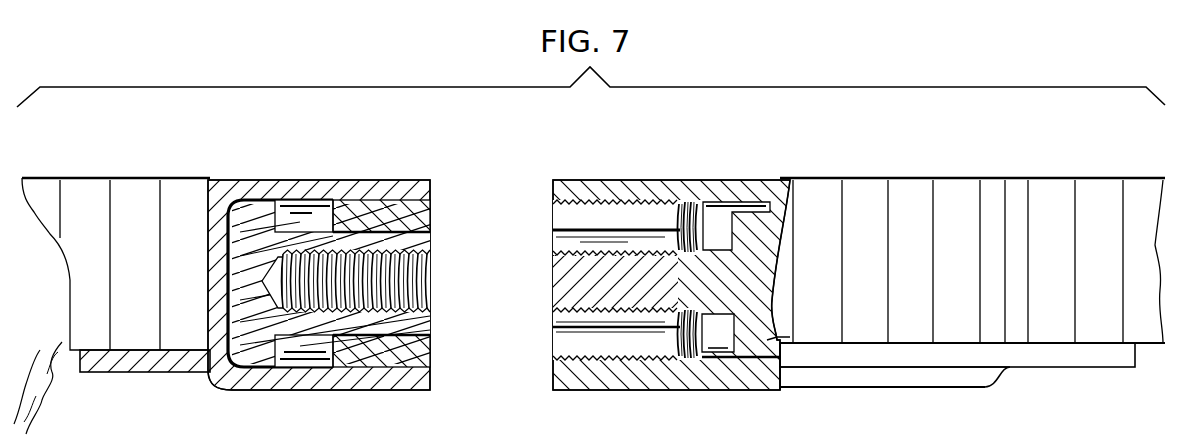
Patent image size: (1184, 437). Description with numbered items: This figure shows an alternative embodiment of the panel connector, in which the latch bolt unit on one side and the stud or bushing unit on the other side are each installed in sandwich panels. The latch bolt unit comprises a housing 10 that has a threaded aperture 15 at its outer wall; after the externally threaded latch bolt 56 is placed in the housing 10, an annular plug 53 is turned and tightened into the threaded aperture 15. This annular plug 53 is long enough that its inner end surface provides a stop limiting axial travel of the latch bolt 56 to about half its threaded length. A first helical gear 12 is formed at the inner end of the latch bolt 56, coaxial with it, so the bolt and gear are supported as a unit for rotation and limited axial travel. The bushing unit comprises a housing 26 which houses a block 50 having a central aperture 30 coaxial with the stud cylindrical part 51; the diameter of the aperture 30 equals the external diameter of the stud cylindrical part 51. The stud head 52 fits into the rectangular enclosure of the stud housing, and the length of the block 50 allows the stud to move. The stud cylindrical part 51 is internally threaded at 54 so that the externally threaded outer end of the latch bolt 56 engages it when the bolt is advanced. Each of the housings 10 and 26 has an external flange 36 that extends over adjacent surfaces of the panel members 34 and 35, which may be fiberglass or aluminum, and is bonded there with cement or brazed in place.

The panel member 34 is at (100, 178).
The stud head 52 is at (250, 204).
The block 50 is at (405, 213).
The central aperture 30 is at (424, 232).
The stud cylindrical part 51 is at (414, 249).
The internal thread 54 is at (400, 292).
The external flange 36 is at (157, 362).
The housing 26 is at (390, 380).
The annular plug 53 is at (560, 220).
The latch bolt 56 is at (570, 241).
The threaded aperture 15 is at (568, 350).
The housing 10 is at (600, 380).
The first helical gear 12 is at (771, 346).
The panel member 35 is at (1101, 178).